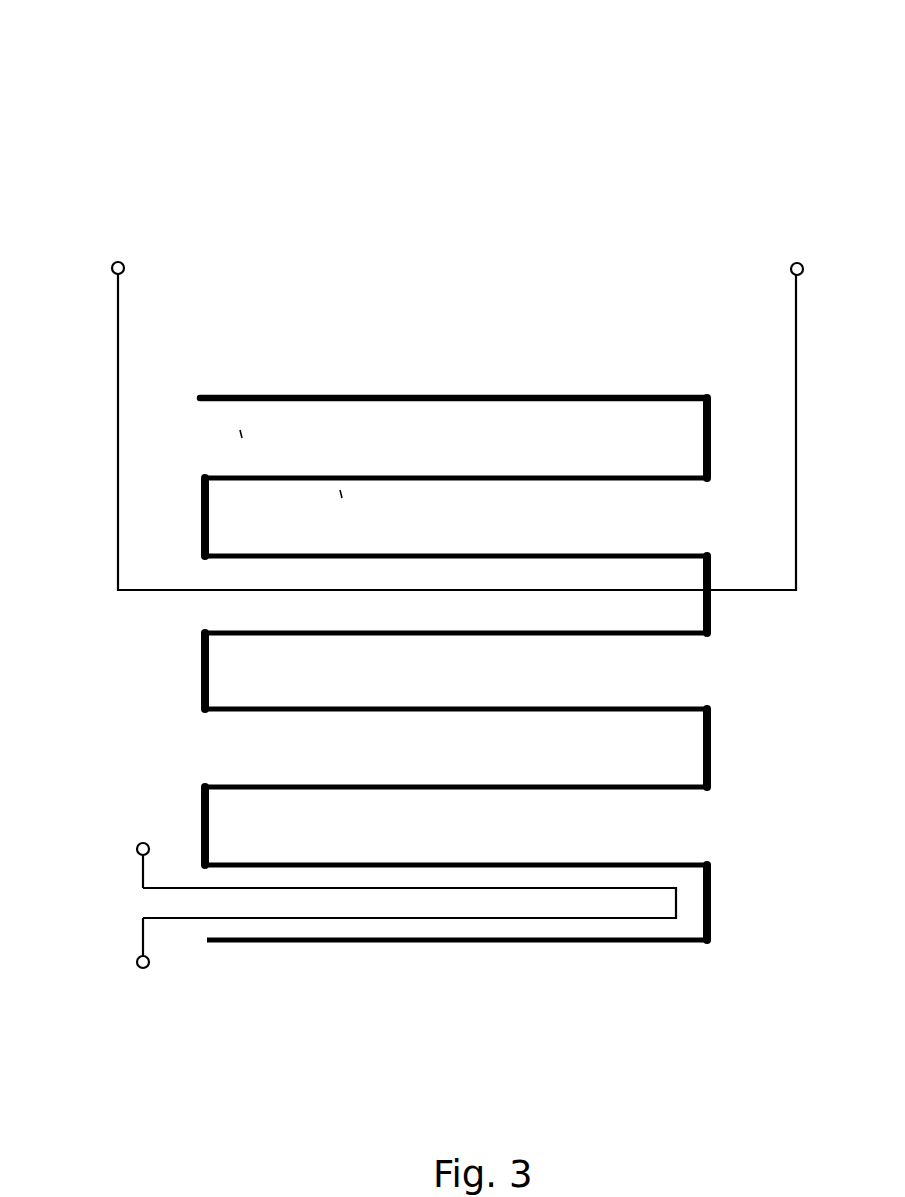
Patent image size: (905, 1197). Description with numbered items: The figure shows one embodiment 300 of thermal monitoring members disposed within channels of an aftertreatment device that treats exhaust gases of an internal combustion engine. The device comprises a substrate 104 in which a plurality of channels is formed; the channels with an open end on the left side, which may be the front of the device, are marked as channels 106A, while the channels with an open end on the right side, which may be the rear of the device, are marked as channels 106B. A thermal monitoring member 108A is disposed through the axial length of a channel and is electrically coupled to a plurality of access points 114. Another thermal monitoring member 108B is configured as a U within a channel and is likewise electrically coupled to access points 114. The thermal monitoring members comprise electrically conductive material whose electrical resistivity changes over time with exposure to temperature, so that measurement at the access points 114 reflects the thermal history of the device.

The inductor structure 300 is at (78, 71).
The substrate 104 is at (455, 398).
The channel with open end on the left side 106A is at (272, 440).
The channel with open end on the right side 106B is at (357, 508).
The thermal monitoring member 108A is at (445, 592).
The U-shaped thermal monitoring member 108B is at (453, 890).
The access point 114 is at (117, 262).